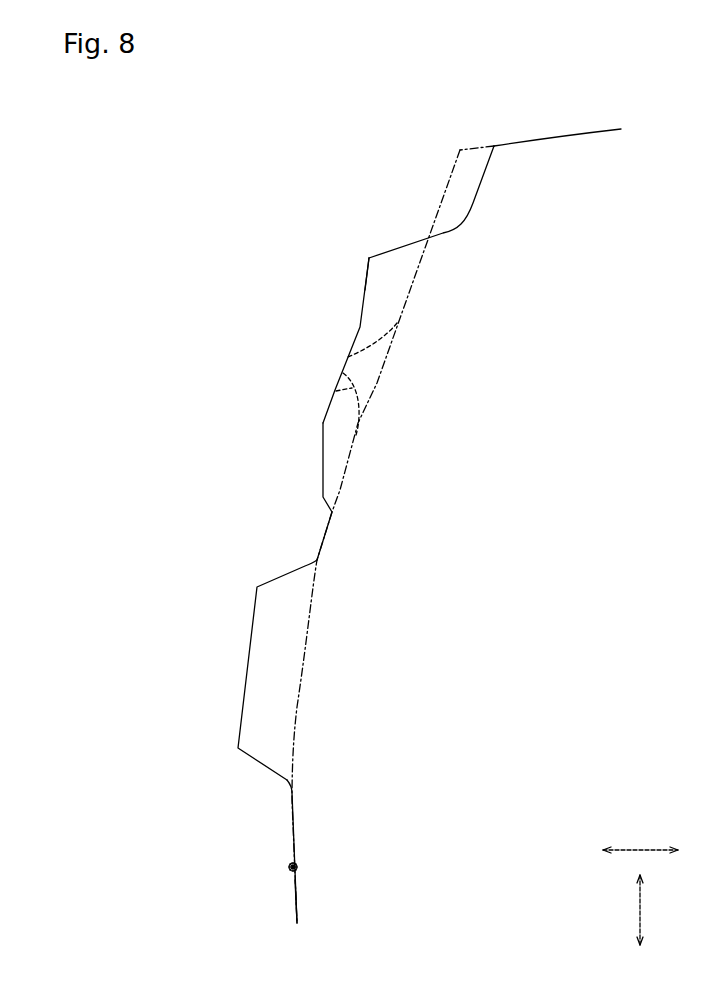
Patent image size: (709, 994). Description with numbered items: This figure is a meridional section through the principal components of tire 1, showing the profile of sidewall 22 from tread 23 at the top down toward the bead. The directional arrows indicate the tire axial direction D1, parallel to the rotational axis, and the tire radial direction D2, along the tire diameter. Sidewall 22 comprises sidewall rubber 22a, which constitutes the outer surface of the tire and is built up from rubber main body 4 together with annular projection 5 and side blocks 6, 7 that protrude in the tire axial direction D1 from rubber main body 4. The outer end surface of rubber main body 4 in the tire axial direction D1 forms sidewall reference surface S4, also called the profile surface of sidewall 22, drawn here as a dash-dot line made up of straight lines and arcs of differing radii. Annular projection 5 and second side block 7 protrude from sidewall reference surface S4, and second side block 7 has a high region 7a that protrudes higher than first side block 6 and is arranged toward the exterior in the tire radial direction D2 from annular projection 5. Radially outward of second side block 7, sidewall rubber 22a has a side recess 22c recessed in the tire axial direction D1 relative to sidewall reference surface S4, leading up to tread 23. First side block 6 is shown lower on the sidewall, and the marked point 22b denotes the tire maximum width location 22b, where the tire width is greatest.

The tire 1 is at (145, 93).
The tread 23 is at (505, 127).
The side recess 22c is at (465, 195).
The high region 7a is at (375, 270).
The second side block 7 is at (348, 305).
The annular projection 5 is at (333, 391).
The sidewall reference surface S4 is at (347, 467).
The first side block 6 is at (225, 657).
The rubber main body 4 is at (302, 840).
The sidewall 22 is at (205, 353).
The sidewall rubber 22a is at (297, 912).
The tire maximum width location 22b is at (279, 867).
The tire axial direction D1 is at (640, 843).
The tire radial direction D2 is at (651, 910).